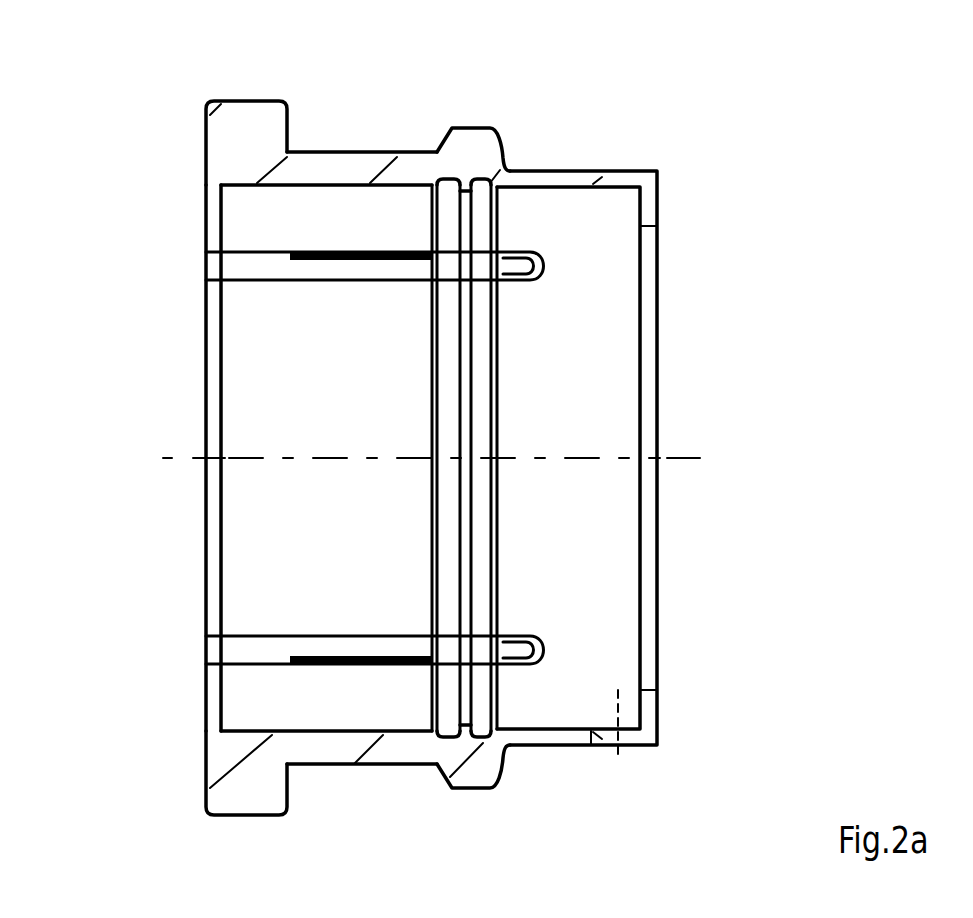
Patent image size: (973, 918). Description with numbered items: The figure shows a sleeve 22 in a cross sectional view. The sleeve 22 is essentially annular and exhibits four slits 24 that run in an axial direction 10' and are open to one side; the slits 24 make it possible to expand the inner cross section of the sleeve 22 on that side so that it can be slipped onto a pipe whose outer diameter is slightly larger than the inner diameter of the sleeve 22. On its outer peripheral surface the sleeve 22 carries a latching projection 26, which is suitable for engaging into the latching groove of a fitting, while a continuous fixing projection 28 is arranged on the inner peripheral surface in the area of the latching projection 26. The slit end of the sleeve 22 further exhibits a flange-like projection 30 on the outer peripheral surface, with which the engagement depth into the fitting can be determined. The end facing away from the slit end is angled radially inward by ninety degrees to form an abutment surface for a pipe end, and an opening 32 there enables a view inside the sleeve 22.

The sleeve 22 is at (888, 66).
The slits 24 is at (222, 262).
The latching projection 26 is at (472, 140).
The fixing projection 28 is at (466, 735).
The flange-like projection 30 is at (250, 800).
The opening 32 is at (630, 742).
The axial direction 10' is at (466, 435).